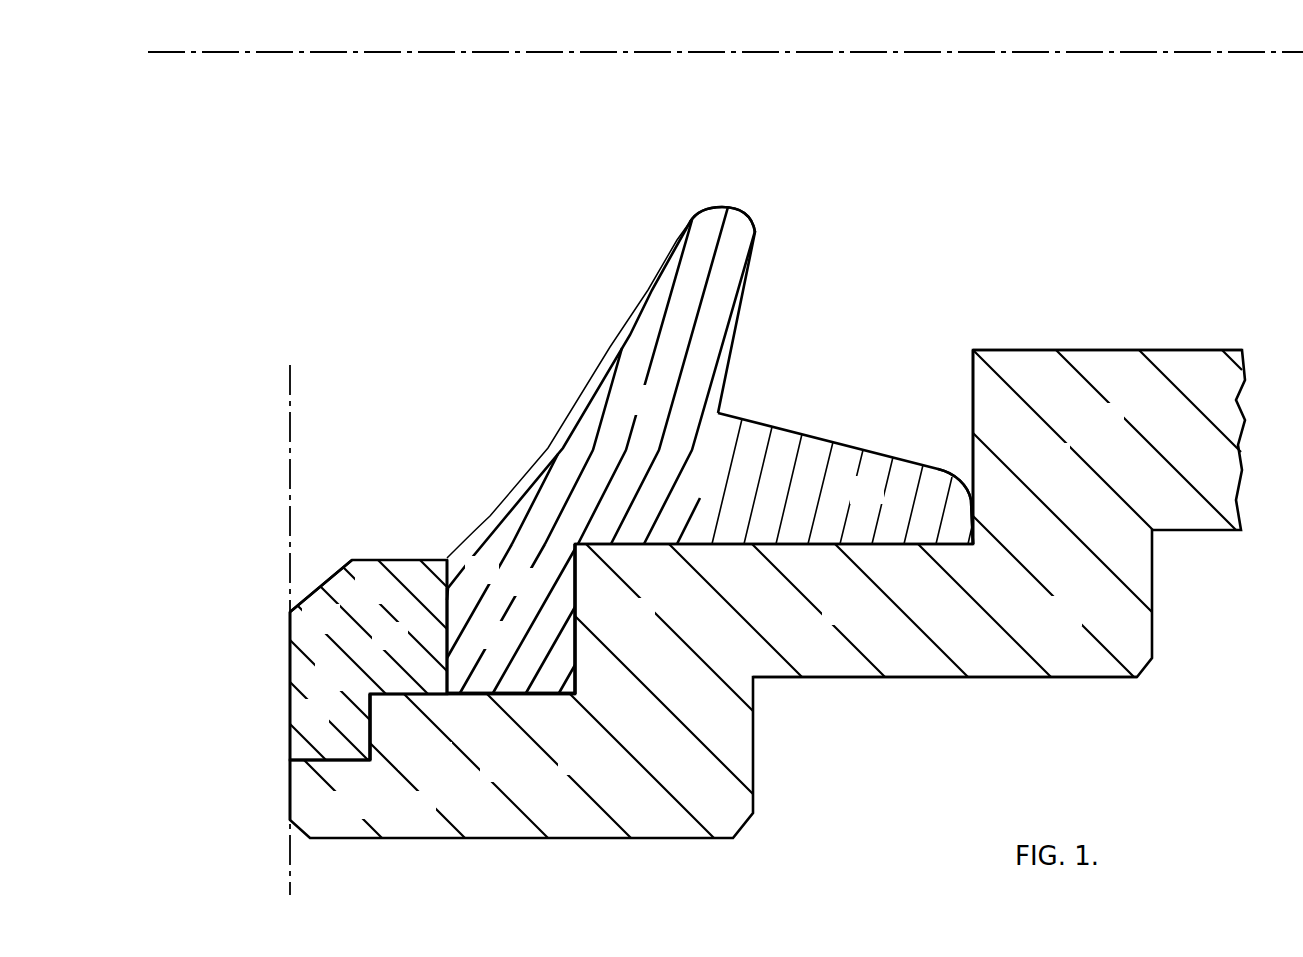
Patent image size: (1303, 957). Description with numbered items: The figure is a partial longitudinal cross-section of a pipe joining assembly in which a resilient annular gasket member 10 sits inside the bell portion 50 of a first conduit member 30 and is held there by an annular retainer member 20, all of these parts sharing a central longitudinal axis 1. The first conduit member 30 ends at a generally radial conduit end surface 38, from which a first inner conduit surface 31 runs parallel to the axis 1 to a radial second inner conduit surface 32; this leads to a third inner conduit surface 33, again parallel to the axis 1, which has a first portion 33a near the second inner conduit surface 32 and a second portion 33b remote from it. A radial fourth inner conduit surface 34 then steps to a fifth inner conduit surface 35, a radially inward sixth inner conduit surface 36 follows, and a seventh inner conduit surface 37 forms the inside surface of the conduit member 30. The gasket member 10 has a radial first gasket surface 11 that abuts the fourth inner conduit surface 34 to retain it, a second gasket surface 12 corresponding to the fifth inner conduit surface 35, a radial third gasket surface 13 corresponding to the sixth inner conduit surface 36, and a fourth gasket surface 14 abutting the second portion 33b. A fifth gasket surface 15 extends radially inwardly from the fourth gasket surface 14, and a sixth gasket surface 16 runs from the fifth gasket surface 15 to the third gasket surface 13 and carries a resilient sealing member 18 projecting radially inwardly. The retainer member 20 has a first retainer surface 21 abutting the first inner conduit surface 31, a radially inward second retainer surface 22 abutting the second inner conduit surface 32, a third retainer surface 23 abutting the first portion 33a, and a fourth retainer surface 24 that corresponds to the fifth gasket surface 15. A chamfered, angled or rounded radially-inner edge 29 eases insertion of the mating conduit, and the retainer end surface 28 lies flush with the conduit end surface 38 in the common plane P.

The central longitudinal axis 1 is at (415, 60).
The plane P is at (290, 616).
The resilient annular gasket member 10 is at (659, 416).
The first gasket surface 11 is at (572, 591).
The second gasket surface 12 is at (730, 537).
The third gasket surface 13 is at (966, 507).
The fourth gasket surface 14 is at (511, 688).
The fifth gasket surface 15 is at (452, 596).
The sixth gasket surface 16 is at (605, 345).
The resilient sealing member 18 is at (712, 250).
The annular retainer member 20 is at (335, 637).
The first retainer surface 21 is at (328, 756).
The second retainer surface 22 is at (367, 713).
The third retainer surface 23 is at (410, 689).
The fourth retainer surface 24 is at (441, 583).
The retainer end surface 28 is at (287, 648).
The radially-inner edge 29 is at (325, 566).
The first conduit member 30 is at (1075, 628).
The first inner conduit surface 31 is at (347, 765).
The second inner conduit surface 32 is at (388, 768).
The third inner conduit surface 33 is at (488, 700).
The first portion of third inner conduit surface 33a is at (378, 752).
The second portion of third inner conduit surface 33b is at (538, 700).
The fourth inner conduit surface 34 is at (581, 632).
The fifth inner conduit surface 35 is at (802, 553).
The sixth inner conduit surface 36 is at (983, 440).
The seventh inner conduit surface 37 is at (1094, 355).
The conduit end surface 38 is at (287, 785).
The bell portion 50 is at (872, 690).